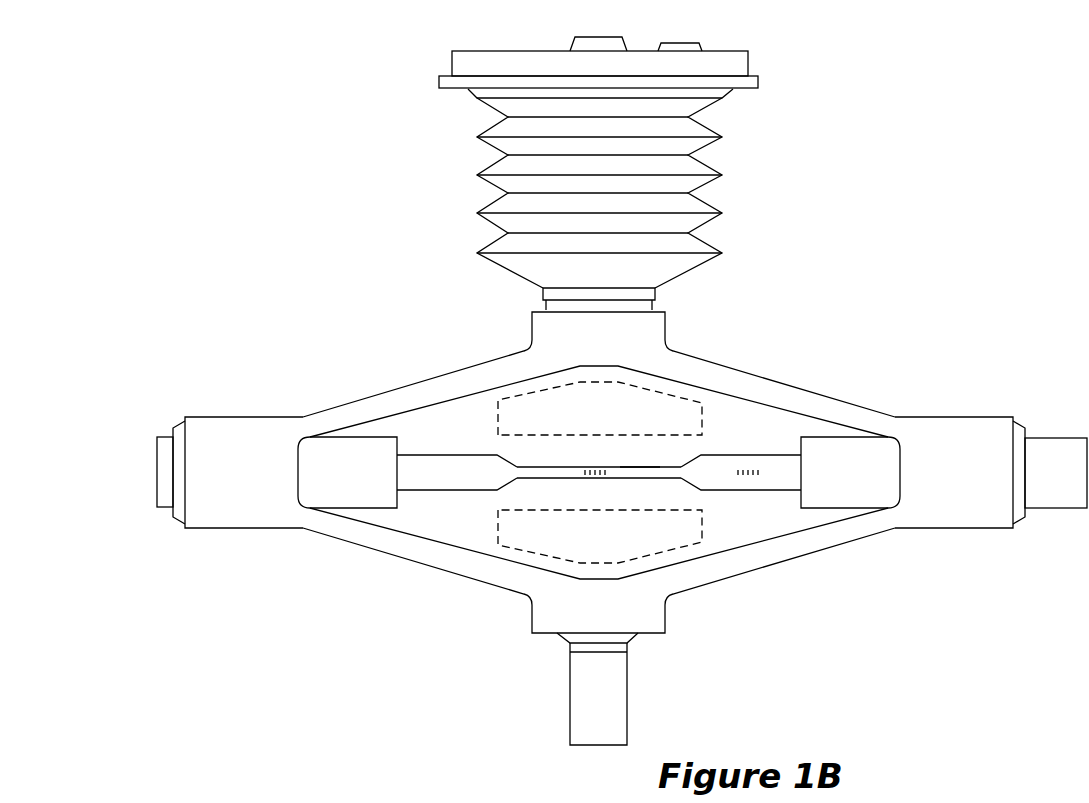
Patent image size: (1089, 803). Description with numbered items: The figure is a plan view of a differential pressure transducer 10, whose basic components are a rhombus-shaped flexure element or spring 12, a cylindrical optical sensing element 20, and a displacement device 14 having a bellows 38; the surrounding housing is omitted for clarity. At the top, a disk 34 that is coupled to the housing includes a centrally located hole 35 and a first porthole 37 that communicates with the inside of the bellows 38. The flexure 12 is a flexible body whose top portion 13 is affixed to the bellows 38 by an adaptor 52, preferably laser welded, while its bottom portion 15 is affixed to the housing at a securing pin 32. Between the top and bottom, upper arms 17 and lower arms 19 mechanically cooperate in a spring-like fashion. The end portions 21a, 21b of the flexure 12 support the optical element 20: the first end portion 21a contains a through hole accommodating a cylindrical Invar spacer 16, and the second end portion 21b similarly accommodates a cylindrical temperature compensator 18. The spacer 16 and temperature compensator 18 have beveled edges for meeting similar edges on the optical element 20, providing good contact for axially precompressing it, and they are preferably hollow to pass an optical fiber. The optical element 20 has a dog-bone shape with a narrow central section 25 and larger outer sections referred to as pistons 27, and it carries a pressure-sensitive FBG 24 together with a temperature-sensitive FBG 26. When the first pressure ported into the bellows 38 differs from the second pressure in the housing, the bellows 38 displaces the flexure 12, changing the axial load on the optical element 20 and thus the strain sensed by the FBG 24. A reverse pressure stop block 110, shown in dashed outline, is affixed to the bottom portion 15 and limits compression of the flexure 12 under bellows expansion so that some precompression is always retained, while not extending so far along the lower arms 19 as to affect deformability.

The differential pressure transducer 10 is at (1002, 204).
The flexure 12 is at (320, 354).
The top portion 13 is at (646, 332).
The displacement device 14 is at (757, 33).
The bottom portion 15 is at (650, 612).
The spacer 16 is at (315, 490).
The upper arms 17 is at (385, 400).
The temperature compensator 18 is at (882, 488).
The lower arms 19 is at (455, 562).
The optical sensing element 20 is at (782, 503).
The first end portion 21a is at (250, 432).
The second end portion 21b is at (958, 437).
The pressure-sensitive FBG 24 is at (597, 470).
The narrow central section 25 is at (640, 470).
The temperature-sensitive FBG 26 is at (745, 472).
The pistons 27 is at (462, 472).
The securing pin 32 is at (612, 690).
The disk 34 is at (738, 63).
The centrally located hole 35 is at (598, 34).
The first porthole 37 is at (682, 43).
The bellows 38 is at (483, 172).
The adaptor 52 is at (540, 296).
The reverse pressure stop block 110 is at (518, 417).